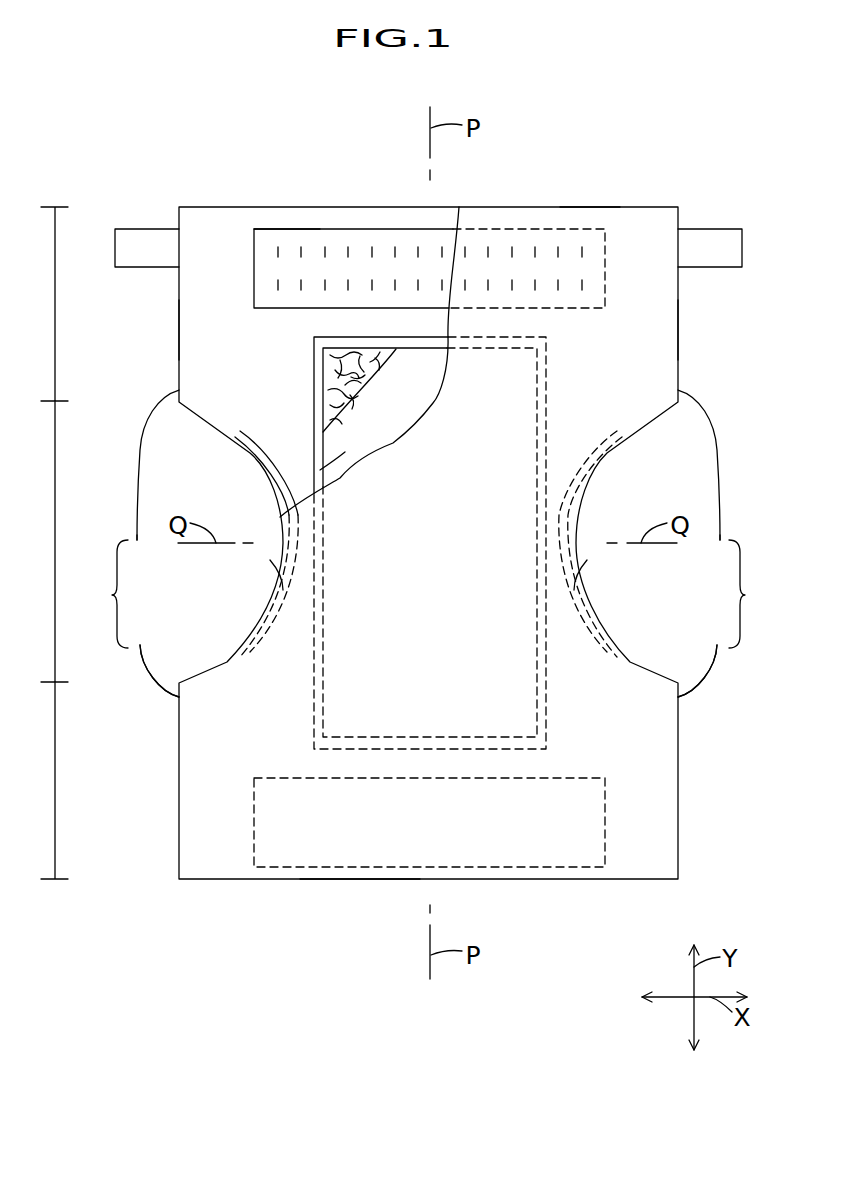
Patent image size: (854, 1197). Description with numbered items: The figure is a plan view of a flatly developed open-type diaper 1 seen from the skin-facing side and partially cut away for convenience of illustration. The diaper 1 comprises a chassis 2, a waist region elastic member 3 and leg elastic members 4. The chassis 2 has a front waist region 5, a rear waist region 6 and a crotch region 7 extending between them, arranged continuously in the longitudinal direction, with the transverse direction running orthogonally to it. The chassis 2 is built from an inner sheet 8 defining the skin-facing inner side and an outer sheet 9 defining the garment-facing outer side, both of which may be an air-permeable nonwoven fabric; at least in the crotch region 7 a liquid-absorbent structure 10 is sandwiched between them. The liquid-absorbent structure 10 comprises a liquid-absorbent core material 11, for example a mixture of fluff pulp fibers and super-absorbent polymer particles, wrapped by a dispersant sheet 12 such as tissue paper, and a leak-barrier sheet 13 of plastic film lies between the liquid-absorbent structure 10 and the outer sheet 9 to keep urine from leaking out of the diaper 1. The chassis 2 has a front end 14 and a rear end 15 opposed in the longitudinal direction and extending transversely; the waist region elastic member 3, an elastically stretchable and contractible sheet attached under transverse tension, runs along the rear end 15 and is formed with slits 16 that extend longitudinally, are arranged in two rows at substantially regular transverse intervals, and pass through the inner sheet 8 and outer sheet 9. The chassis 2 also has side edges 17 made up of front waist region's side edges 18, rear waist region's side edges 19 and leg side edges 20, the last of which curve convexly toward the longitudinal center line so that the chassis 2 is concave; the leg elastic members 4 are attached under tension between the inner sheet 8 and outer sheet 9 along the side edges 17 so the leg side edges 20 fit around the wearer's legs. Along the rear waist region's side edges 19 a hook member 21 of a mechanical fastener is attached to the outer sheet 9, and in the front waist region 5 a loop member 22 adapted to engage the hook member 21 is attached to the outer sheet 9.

The diaper 1 is at (665, 130).
The chassis 2 is at (593, 200).
The waist region elastic member 3 is at (291, 217).
The leg elastic members 4 is at (250, 457).
The front waist region 5 is at (55, 778).
The rear waist region 6 is at (55, 305).
The crotch region 7 is at (55, 529).
The inner sheet 8 is at (655, 331).
The outer sheet 9 is at (200, 353).
The liquid-absorbent structure 10 is at (303, 378).
The liquid-absorbent core material 11 is at (333, 398).
The dispersant sheet 12 is at (340, 453).
The leak-barrier sheet 13 is at (345, 340).
The front end 14 is at (360, 880).
The rear end 15 is at (378, 207).
The slits 16 is at (278, 285).
The side edges 17 is at (429, 543).
The front waist region's side edges 18 is at (428, 657).
The rear waist region's side edges 19 is at (428, 551).
The leg side edges 20 is at (577, 573).
The hook member 21 is at (712, 240).
The loop member 22 is at (303, 840).